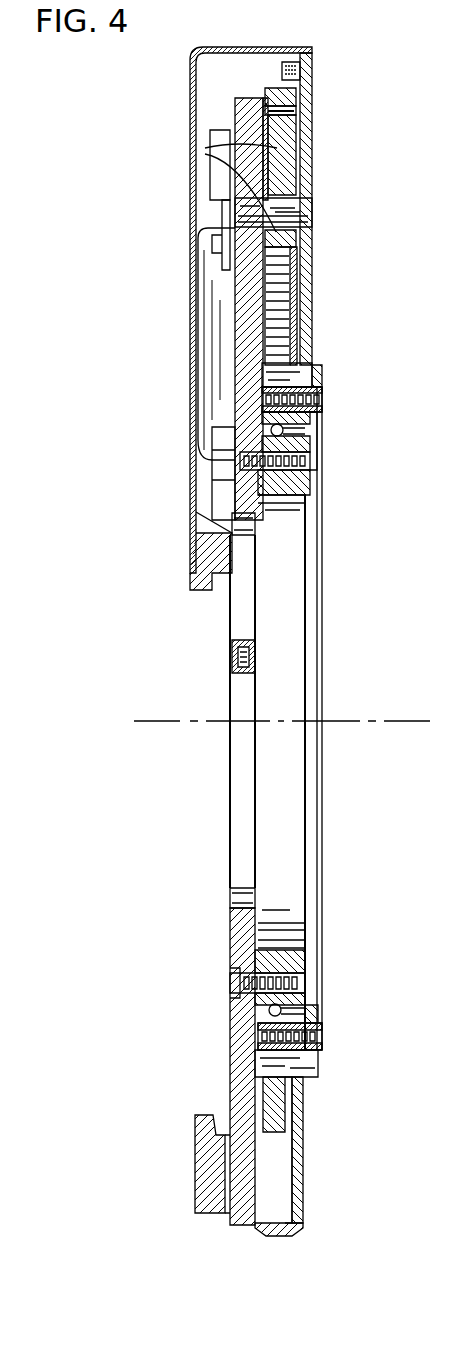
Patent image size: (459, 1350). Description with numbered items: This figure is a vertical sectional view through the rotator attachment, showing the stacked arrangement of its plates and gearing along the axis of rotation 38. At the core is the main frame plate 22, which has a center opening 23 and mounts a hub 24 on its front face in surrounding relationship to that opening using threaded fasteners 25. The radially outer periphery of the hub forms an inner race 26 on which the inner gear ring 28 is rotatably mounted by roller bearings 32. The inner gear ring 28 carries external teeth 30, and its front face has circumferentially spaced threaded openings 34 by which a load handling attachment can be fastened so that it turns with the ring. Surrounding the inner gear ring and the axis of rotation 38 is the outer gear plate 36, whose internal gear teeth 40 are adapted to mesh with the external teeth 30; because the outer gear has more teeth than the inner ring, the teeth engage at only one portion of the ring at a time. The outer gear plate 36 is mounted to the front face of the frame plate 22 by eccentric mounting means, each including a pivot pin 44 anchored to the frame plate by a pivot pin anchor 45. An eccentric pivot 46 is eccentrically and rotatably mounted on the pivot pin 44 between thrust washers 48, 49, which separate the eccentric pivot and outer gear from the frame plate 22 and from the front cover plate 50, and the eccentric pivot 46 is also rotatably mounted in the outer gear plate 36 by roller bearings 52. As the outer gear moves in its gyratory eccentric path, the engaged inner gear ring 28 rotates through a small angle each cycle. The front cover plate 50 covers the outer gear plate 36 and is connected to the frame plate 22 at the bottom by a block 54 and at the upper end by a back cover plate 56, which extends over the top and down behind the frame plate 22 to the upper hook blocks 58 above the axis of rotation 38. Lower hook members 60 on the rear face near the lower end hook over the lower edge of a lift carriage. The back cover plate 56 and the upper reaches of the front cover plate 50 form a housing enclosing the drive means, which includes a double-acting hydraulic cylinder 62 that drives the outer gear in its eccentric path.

The main frame plate 22 is at (250, 98).
The center opening 23 is at (242, 530).
The hub 24 is at (306, 556).
The threaded fasteners 25 is at (236, 986).
The inner race 26 is at (310, 448).
The inner gear ring 28 is at (322, 382).
The external teeth 30 is at (300, 366).
The roller bearings 32 is at (284, 432).
The threaded openings 34 is at (322, 398).
The outer gear plate 36 is at (296, 104).
The axis of rotation 38 is at (405, 722).
The internal gear teeth 40 is at (297, 285).
The pivot pin 44 is at (312, 214).
The pivot pin anchor 45 is at (225, 218).
The eccentric pivot 46 is at (305, 168).
The thrust washer 48 is at (262, 95).
The thrust washer 49 is at (296, 112).
The front cover plate 50 is at (300, 135).
The roller bearings 52 is at (205, 154).
The block 54 is at (290, 1234).
The back cover plate 56 is at (191, 110).
The upper hook blocks 58 is at (190, 576).
The lower hook members 60 is at (196, 1160).
The double-acting hydraulic cylinder 62 is at (199, 292).